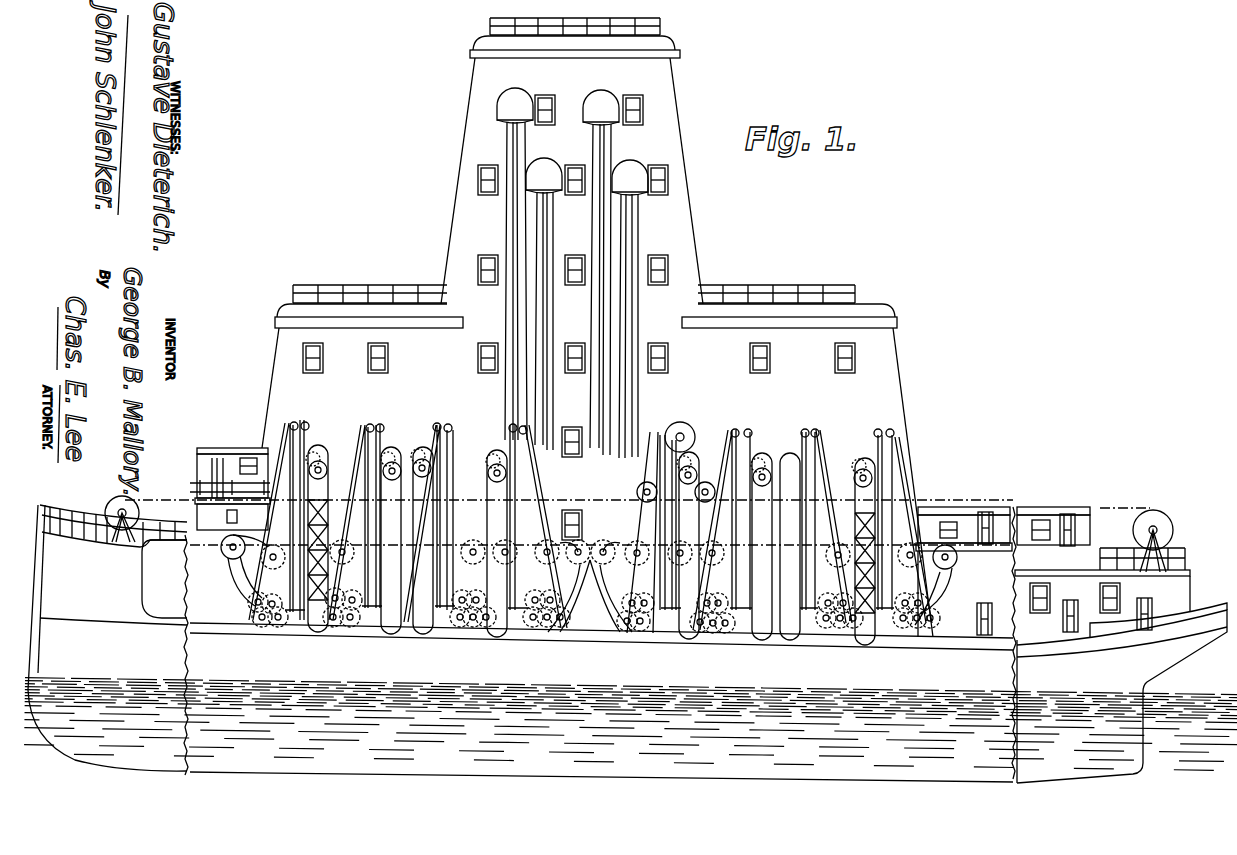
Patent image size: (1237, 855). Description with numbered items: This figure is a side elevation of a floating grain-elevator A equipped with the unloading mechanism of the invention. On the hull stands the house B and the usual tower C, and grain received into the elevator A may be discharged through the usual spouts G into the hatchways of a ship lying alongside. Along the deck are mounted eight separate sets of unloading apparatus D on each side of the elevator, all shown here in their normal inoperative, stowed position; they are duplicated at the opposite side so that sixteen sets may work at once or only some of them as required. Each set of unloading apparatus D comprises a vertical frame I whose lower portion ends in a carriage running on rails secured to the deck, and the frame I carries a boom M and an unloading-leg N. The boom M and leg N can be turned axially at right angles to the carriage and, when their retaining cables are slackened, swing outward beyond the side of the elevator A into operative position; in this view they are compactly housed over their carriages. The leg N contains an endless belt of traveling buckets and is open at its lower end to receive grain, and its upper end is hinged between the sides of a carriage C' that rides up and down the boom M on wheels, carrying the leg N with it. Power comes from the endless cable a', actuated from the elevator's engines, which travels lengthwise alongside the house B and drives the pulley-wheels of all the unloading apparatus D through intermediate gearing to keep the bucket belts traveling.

The floating grain-elevator A is at (627, 639).
The main deck / hull midsection A' is at (569, 641).
The endless cable a' is at (1135, 526).
The house B is at (597, 461).
The tower C is at (572, 279).
The carriage C' is at (589, 457).
The unloading apparatus D is at (590, 525).
The spouts G is at (508, 228).
The vertical frame I is at (594, 573).
The boom M is at (450, 470).
The unloading-leg N is at (327, 513).